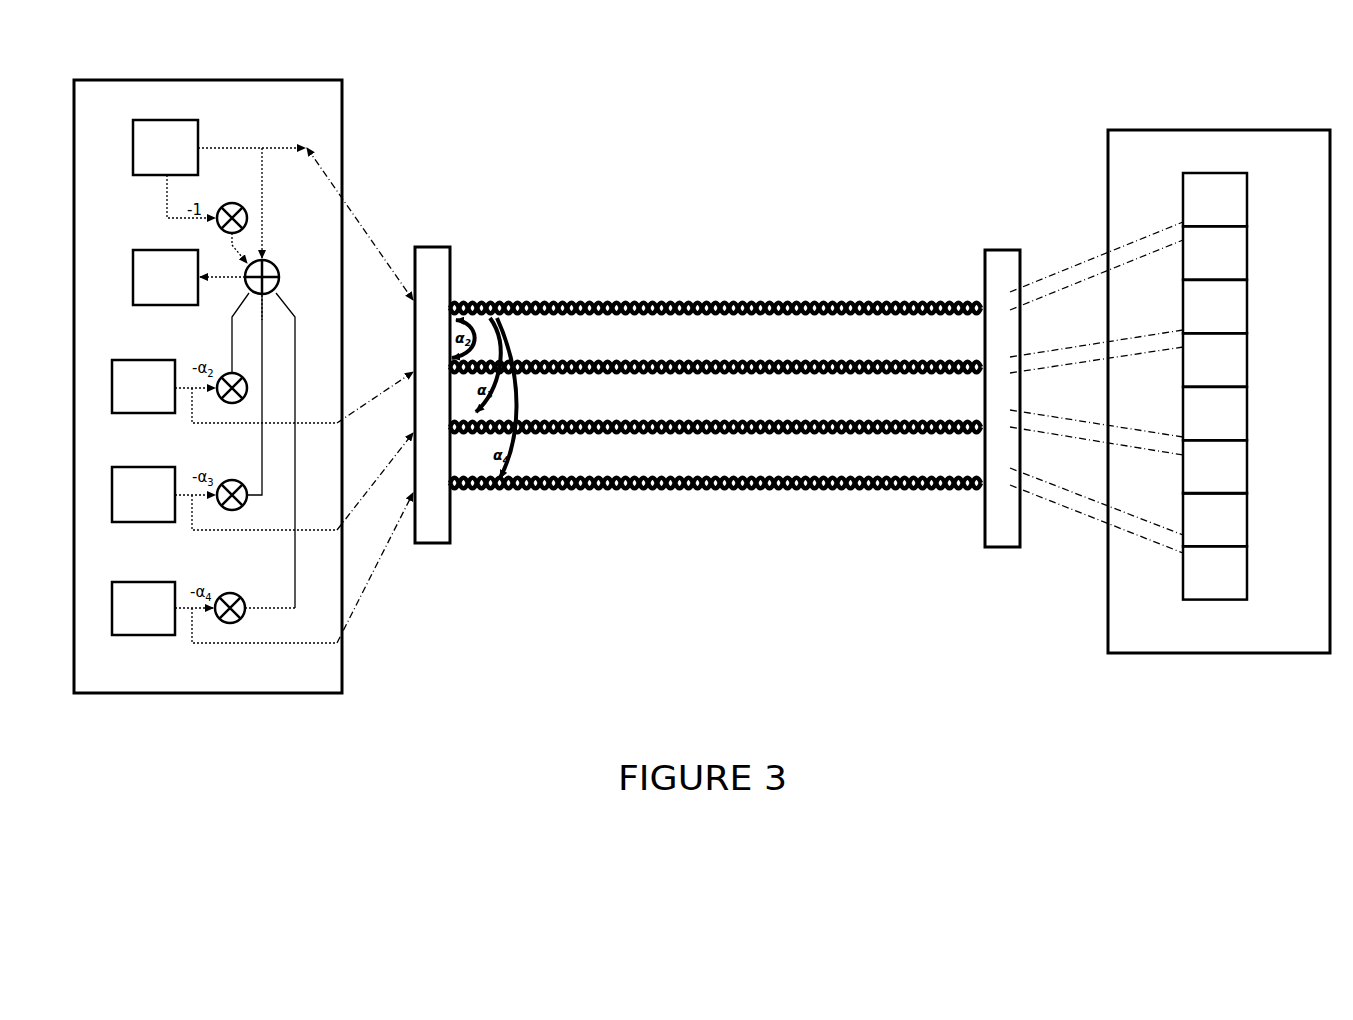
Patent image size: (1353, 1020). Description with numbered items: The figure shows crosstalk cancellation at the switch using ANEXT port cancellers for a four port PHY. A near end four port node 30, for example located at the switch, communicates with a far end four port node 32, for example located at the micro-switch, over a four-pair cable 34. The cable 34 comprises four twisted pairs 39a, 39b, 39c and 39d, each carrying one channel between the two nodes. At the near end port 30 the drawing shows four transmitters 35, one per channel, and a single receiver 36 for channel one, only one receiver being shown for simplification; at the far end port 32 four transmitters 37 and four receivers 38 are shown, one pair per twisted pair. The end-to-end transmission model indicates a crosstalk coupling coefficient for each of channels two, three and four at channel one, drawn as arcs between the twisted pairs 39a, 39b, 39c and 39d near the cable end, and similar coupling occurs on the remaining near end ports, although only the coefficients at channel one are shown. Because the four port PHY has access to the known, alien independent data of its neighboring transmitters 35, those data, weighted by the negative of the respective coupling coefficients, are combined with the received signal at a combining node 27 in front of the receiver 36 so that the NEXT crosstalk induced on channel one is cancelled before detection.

The near end four port node 30 is at (343, 142).
The transmitters 35 is at (160, 120).
The receiver 36 is at (152, 250).
The summing node (crosstalk canceller) 27 is at (262, 295).
The four-pair cable 34 is at (647, 302).
The twisted pair 39a is at (835, 306).
The twisted pair 39b is at (778, 366).
The twisted pair 39c is at (705, 425).
The twisted pair 39d is at (648, 480).
The far end four port node 32 is at (1172, 130).
The transmitters 37 is at (1247, 198).
The receivers 38 is at (1247, 257).